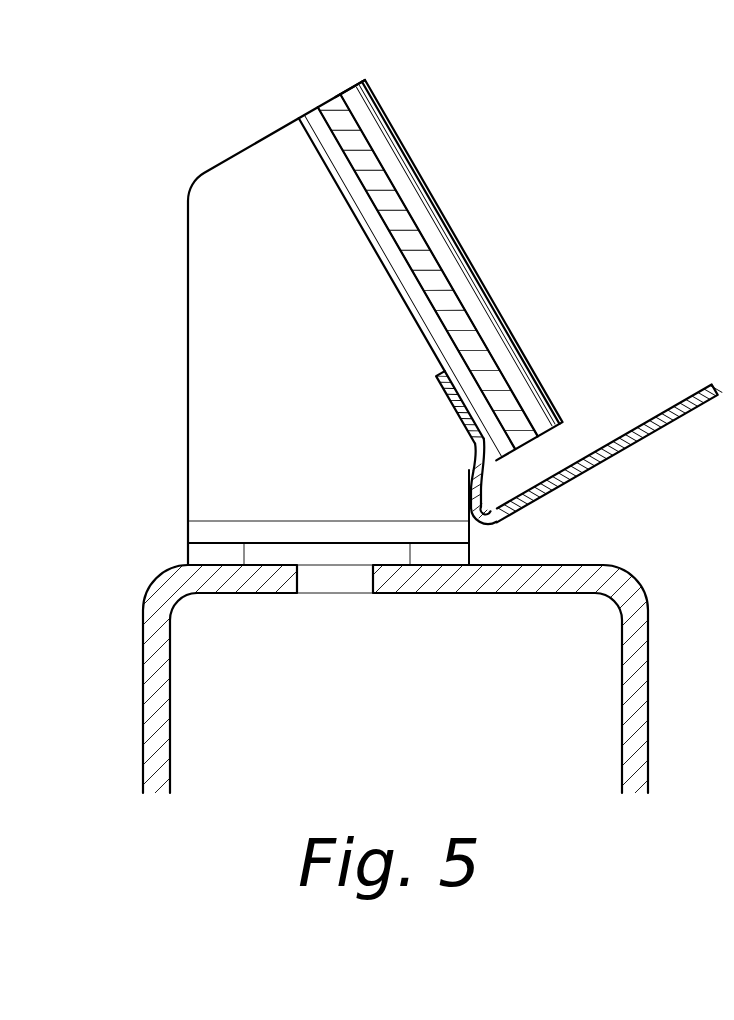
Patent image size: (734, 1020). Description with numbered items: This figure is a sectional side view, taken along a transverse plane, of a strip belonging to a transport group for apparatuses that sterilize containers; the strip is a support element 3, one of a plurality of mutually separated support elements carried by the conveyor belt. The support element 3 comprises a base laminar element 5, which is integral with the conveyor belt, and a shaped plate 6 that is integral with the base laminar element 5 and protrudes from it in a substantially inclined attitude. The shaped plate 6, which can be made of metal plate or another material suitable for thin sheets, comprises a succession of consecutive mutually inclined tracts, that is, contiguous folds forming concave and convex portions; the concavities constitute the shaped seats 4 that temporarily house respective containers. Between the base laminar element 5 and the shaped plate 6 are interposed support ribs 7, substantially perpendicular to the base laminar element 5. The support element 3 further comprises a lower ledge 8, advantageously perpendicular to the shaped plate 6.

The support element 3 is at (446, 230).
The shaped seat 4 is at (400, 203).
The base laminar element 5 is at (527, 590).
The shaped plate 6 is at (341, 88).
The support rib 7 is at (240, 353).
The lower ledge 8 is at (632, 448).